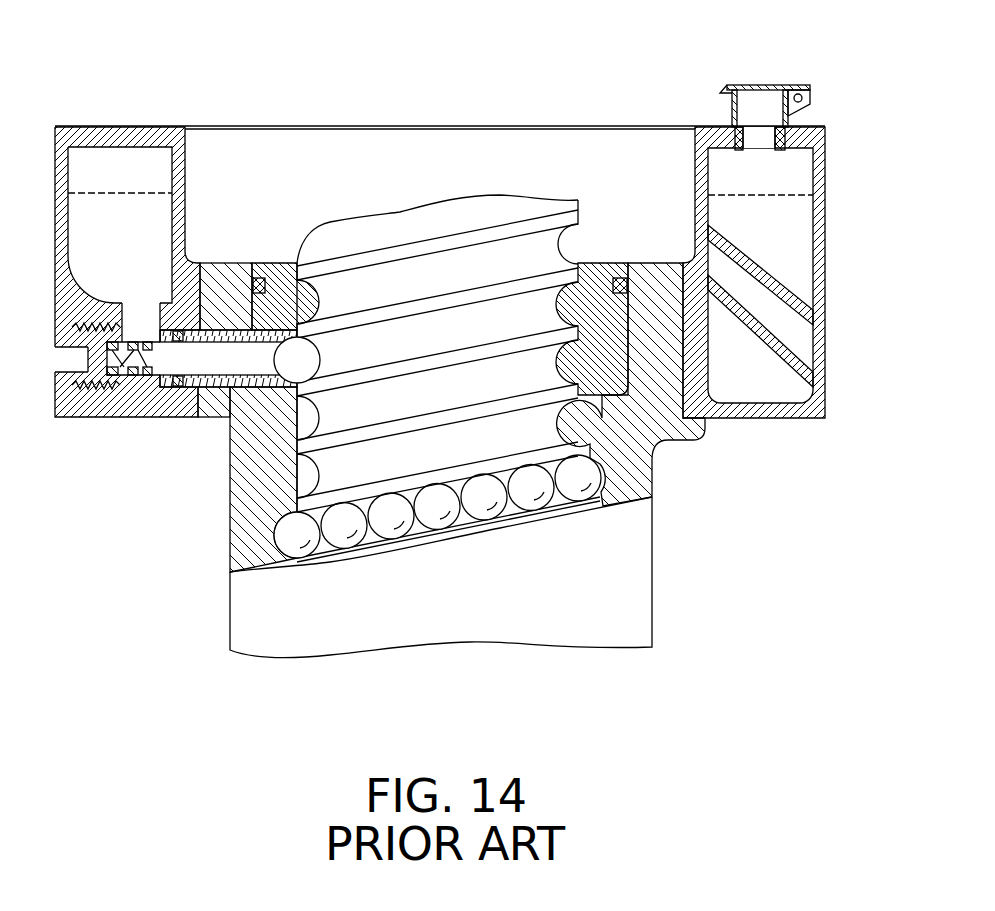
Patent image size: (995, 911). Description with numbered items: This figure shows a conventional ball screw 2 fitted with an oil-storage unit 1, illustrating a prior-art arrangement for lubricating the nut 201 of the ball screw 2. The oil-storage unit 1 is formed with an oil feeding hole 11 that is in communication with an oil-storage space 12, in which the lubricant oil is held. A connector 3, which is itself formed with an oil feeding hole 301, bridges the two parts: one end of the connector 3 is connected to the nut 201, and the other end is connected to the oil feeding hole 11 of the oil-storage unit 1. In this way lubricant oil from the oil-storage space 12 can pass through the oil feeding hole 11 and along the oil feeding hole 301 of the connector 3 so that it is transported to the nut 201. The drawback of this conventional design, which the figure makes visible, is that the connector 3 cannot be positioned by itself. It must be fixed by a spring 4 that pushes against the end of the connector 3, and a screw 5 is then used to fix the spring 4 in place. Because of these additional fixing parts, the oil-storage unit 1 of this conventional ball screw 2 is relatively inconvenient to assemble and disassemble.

The oil-storage unit 1 is at (826, 205).
The oil-storage space 12 is at (88, 178).
The ball screw 2 is at (570, 625).
The nut 201 is at (253, 528).
The connector 3 is at (203, 357).
The oil feeding hole 301 is at (230, 437).
The spring 4 is at (100, 385).
The screw 5 is at (60, 395).
The oil feeding hole 11 is at (177, 392).